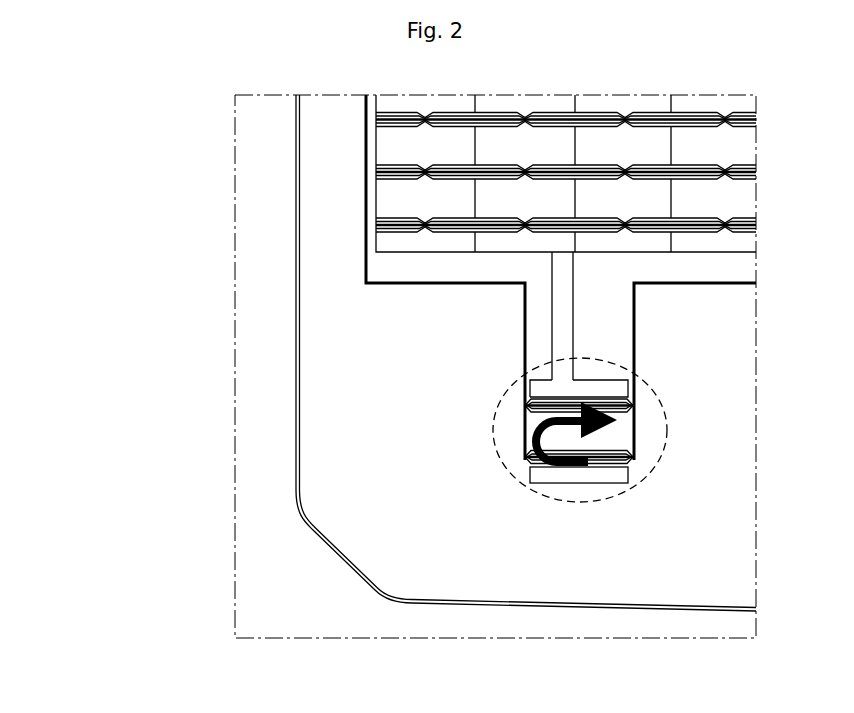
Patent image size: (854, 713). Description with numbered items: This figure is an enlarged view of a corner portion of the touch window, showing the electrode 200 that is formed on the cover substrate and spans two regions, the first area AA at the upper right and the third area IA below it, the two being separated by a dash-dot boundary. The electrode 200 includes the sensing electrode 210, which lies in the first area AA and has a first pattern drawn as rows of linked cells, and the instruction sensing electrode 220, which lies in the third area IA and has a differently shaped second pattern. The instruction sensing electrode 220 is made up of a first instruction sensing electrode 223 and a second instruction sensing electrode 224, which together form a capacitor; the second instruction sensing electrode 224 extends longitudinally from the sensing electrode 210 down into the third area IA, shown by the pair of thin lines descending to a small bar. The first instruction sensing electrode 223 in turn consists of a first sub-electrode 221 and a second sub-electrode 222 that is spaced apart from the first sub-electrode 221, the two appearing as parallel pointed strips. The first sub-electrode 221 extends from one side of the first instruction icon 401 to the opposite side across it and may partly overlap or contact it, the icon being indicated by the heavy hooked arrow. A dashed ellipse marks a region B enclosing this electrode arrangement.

The electrode 200 is at (76, 434).
The sensing electrode 210 is at (485, 150).
The instruction sensing electrode 220 is at (357, 373).
The first sub-electrode 221 is at (527, 407).
The second sub-electrode 222 is at (540, 467).
The first instruction sensing electrode 223 is at (382, 446).
The second instruction sensing electrode 224 is at (537, 387).
The first instruction icon 401 is at (633, 438).
The first area AA is at (750, 267).
The third area IA is at (748, 440).
The region B is at (577, 505).